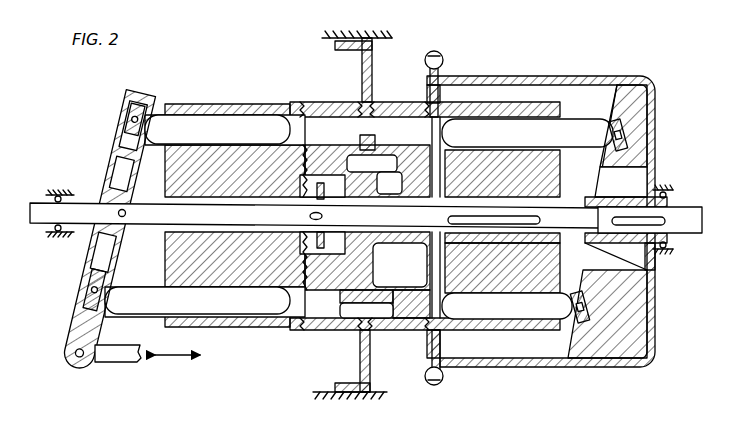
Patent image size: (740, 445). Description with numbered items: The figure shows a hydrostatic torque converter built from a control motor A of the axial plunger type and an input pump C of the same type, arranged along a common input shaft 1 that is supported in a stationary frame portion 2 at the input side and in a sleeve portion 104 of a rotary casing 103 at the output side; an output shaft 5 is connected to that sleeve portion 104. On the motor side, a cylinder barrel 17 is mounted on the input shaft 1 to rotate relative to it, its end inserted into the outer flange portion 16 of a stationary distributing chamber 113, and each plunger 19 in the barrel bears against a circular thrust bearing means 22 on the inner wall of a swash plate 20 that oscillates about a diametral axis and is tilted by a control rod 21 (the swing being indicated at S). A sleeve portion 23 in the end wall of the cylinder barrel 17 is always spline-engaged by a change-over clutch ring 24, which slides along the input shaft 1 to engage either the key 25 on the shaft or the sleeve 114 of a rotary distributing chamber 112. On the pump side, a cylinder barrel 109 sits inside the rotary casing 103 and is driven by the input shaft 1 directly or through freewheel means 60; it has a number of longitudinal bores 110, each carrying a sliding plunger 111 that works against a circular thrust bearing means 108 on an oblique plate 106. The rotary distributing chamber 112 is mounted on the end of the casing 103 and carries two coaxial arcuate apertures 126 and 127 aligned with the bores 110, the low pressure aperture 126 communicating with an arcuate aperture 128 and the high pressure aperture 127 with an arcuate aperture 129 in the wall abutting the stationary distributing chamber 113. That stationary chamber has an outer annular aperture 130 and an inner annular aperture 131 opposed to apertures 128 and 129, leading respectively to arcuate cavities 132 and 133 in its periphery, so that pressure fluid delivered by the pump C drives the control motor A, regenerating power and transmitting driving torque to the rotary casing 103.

The input shaft 1 is at (38, 221).
The stationary frame portion 2 is at (58, 192).
The output shaft 5 is at (687, 230).
The outer flange portion 16 is at (335, 388).
The cylinder barrel 17 is at (165, 252).
The plunger 19 is at (194, 120).
The swash plate 20 is at (92, 303).
The control rod 21 is at (113, 355).
The circular thrust bearing means 22 is at (128, 112).
The sleeve portion 23 is at (310, 191).
The change-over clutch ring 24 is at (303, 242).
The key 25 is at (309, 216).
The freewheel means 60 is at (548, 233).
The rotary casing 103 is at (578, 76).
The sleeve portion 104 is at (632, 203).
The oblique plate 106 is at (600, 352).
The circular thrust bearing means 108 is at (615, 126).
The cylinder barrel 109 is at (558, 170).
The bores 110 is at (466, 128).
The plunger 111 is at (466, 320).
The rotary distributing chamber 112 is at (420, 105).
The stationary distributing chamber 113 is at (323, 105).
The sleeve 114 is at (343, 235).
The aperture 126 is at (437, 131).
The aperture 127 is at (430, 302).
The arcuate aperture 128 is at (380, 117).
The arcuate aperture 129 is at (390, 165).
The outer annular aperture 130 is at (366, 118).
The inner annular aperture 131 is at (368, 166).
The arcuate cavity 132 is at (305, 118).
The arcuate cavity 133 is at (307, 323).
The control motor A is at (236, 55).
The input pump C is at (522, 50).
The swing S is at (152, 212).